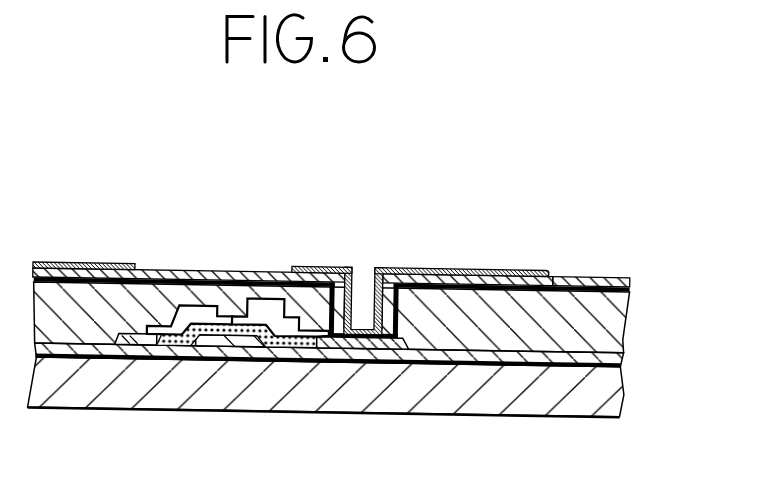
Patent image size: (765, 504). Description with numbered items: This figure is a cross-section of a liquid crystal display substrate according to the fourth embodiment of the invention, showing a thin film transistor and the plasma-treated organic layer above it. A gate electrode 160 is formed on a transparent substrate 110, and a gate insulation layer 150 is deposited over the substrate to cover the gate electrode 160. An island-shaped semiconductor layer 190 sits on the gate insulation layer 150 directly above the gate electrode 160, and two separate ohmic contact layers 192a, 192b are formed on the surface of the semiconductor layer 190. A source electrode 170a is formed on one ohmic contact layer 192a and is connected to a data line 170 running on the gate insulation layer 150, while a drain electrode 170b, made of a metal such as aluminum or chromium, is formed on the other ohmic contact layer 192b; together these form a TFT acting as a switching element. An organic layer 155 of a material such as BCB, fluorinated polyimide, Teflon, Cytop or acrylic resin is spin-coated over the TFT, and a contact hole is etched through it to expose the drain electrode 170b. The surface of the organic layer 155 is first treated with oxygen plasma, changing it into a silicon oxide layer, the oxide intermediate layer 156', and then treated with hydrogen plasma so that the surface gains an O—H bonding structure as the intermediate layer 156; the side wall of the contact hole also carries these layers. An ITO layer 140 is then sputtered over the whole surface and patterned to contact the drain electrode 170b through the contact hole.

The transparent substrate 110 is at (610, 400).
The organic layer 155 is at (550, 343).
The gate insulation layer 150 is at (470, 356).
The data line 170 is at (100, 345).
The gate electrode 160 is at (234, 337).
The ohmic contact layer 192a is at (156, 345).
The ohmic contact layer 192b is at (292, 347).
The semiconductor layer 190 is at (211, 282).
The source electrode 170a is at (158, 272).
The drain electrode 170b is at (323, 266).
The intermediate layer 156 is at (84, 232).
The oxide intermediate layer 156' is at (462, 237).
The ITO layer 140 is at (553, 272).